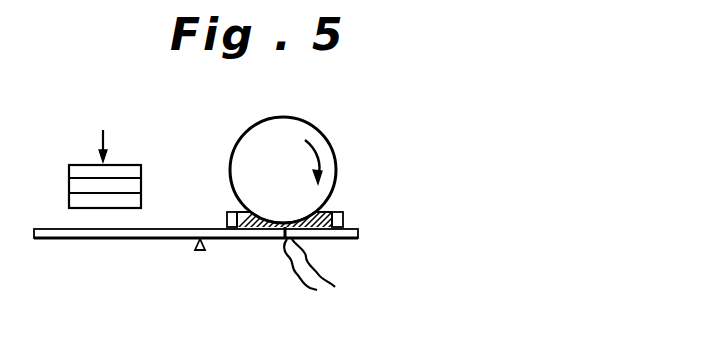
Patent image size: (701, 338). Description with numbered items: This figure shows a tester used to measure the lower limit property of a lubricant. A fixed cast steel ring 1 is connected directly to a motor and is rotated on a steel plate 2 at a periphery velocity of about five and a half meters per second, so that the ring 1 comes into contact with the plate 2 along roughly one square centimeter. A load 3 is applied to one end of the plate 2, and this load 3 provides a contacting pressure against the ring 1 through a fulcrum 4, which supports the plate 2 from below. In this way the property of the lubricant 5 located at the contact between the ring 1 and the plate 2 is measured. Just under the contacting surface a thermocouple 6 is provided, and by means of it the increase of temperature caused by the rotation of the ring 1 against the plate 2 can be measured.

The cast steel ring 1 is at (302, 130).
The steel plate 2 is at (255, 238).
The load 3 is at (130, 168).
The fulcrum 4 is at (197, 250).
The lubricant 5 is at (334, 207).
The thermocouple 6 is at (318, 263).